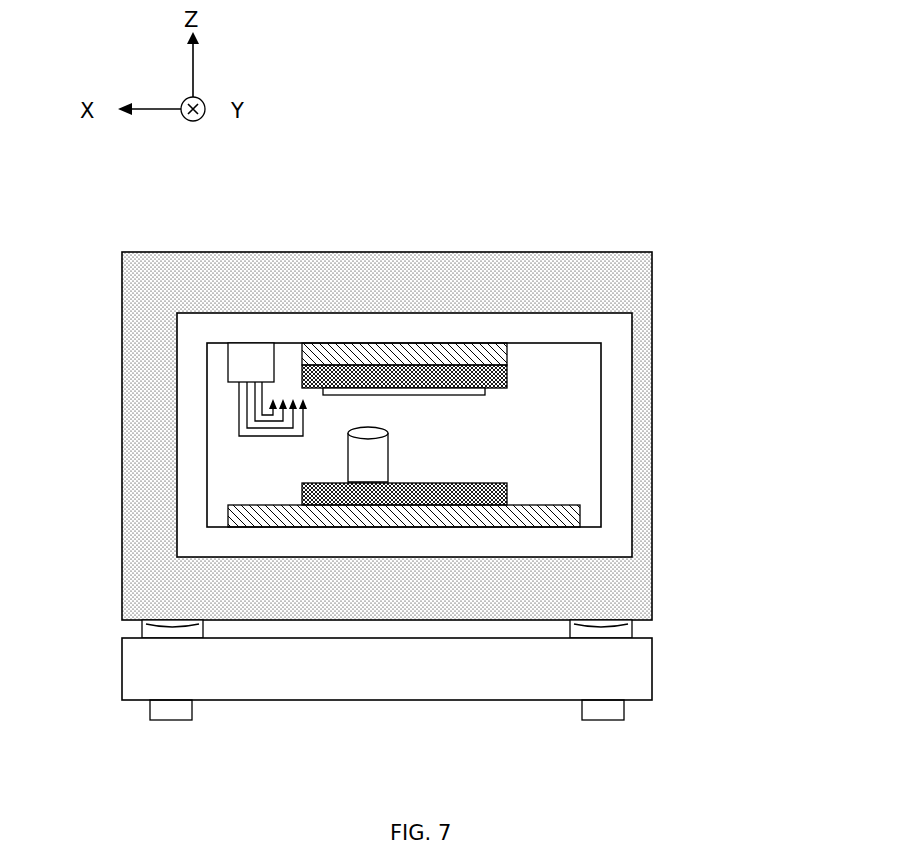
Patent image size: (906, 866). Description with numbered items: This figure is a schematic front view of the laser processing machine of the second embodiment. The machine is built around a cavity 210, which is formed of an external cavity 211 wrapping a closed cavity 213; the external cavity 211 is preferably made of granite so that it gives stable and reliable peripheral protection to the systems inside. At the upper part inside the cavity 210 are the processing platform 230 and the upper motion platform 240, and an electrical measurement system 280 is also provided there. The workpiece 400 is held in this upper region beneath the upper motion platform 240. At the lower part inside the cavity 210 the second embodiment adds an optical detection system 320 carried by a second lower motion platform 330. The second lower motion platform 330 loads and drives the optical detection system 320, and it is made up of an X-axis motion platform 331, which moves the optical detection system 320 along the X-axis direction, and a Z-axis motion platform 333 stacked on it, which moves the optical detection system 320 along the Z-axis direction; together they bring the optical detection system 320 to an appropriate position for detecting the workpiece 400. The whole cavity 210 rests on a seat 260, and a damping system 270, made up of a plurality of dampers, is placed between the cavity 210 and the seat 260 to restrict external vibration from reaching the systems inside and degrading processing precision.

The cavity 210 is at (430, 382).
The external cavity 211 is at (543, 270).
The closed cavity 213 is at (572, 332).
The processing platform 230 is at (290, 377).
The upper motion platform 240 is at (301, 376).
The seat 260 is at (120, 672).
The damping system 270 is at (141, 632).
The electrical measurement system 280 is at (227, 362).
The optical detection system 320 is at (389, 455).
The second lower motion platform 330 is at (509, 500).
The X-axis motion platform 331 is at (581, 512).
The Z-axis motion platform 333 is at (508, 490).
The workpiece 400 is at (464, 394).